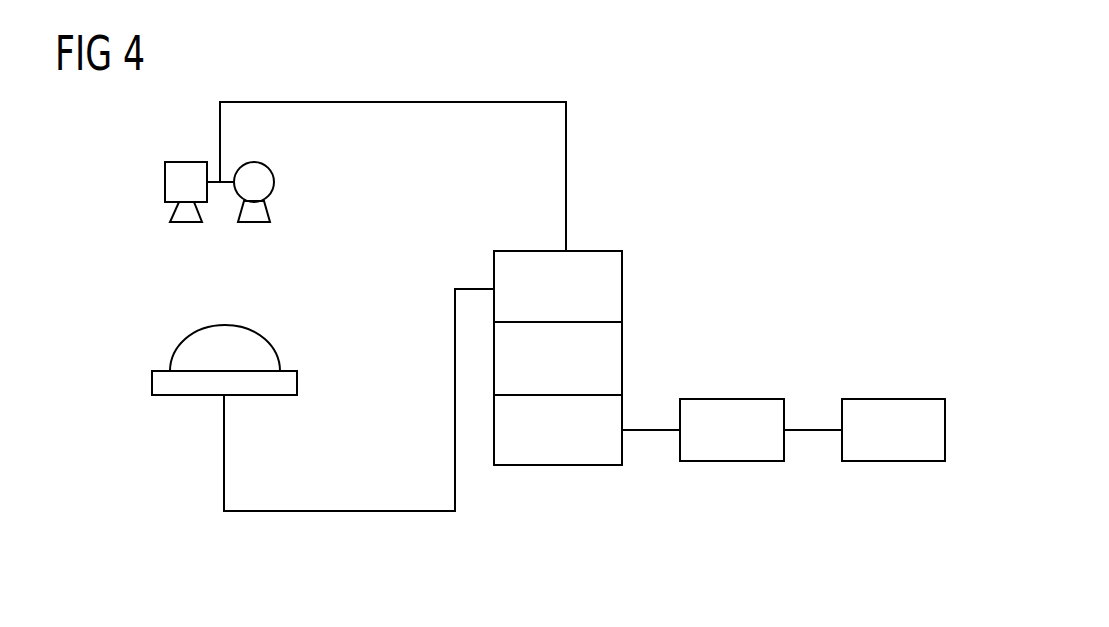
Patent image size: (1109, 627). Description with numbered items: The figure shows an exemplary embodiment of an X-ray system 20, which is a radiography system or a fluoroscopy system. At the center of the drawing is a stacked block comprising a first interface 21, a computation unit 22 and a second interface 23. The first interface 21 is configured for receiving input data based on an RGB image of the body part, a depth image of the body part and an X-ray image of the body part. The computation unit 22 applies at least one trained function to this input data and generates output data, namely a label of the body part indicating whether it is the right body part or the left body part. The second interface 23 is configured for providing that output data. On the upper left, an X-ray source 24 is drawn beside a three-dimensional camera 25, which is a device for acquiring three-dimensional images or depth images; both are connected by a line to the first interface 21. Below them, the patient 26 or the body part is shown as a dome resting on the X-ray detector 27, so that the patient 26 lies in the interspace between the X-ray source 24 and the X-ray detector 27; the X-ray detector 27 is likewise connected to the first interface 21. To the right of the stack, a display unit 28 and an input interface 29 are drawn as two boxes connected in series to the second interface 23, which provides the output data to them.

The X-ray system 20 is at (635, 133).
The first interface 21 is at (614, 266).
The computation unit 22 is at (614, 346).
The second interface 23 is at (551, 457).
The X-ray source 24 is at (266, 174).
The 3D camera 25 is at (157, 175).
The patient 26 is at (162, 354).
The X-ray detector 27 is at (144, 372).
The display unit 28 is at (726, 453).
The input interface 29 is at (889, 453).